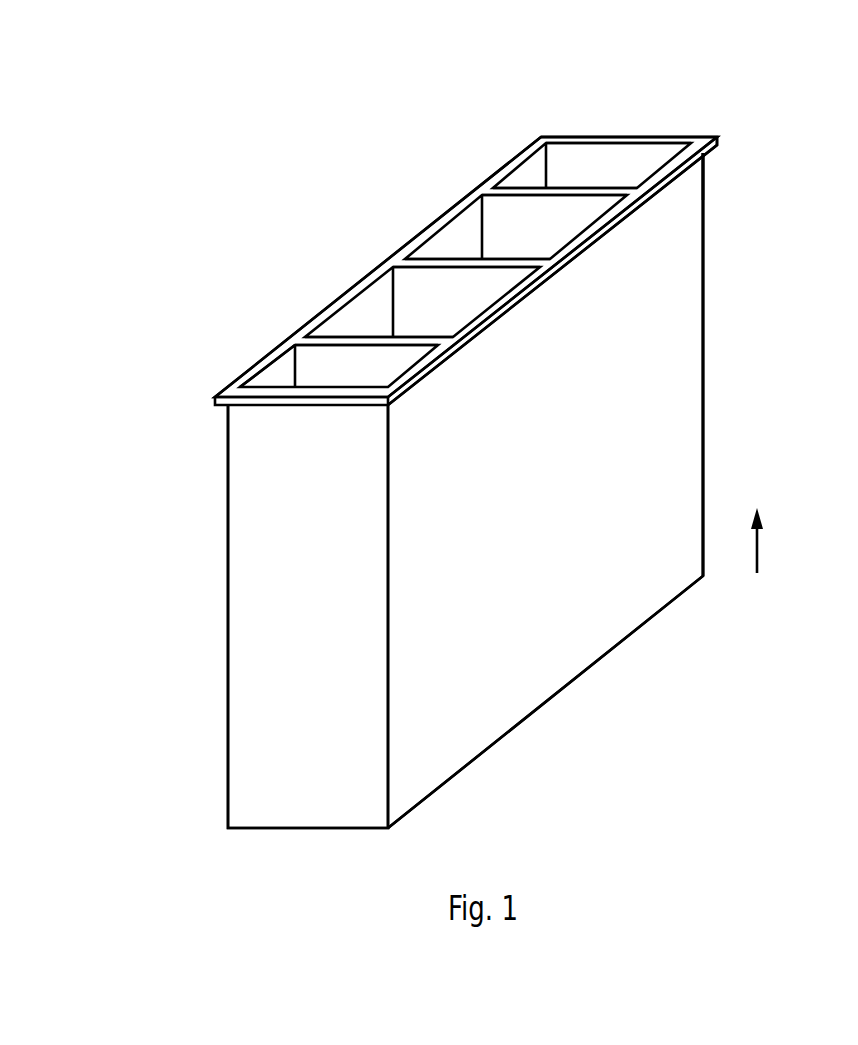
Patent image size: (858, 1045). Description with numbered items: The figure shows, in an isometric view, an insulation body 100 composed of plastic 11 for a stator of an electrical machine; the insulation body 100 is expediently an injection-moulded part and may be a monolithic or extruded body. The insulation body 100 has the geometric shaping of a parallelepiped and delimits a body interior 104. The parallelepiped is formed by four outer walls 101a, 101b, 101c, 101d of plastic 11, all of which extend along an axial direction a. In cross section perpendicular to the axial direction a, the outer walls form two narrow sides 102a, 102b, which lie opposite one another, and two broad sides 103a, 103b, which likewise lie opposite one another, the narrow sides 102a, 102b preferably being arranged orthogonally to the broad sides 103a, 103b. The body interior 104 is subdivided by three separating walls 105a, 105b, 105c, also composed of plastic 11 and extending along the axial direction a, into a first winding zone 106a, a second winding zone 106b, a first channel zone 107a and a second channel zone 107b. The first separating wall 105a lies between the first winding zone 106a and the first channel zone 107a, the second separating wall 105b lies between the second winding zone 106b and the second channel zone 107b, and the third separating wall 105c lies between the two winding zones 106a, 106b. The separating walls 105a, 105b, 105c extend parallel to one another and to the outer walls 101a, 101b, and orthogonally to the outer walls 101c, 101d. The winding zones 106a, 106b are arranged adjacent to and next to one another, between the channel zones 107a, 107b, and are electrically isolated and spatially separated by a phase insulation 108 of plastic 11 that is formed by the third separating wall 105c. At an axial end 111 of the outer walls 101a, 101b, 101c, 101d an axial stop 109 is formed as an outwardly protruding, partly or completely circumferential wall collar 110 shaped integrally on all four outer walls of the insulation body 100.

The insulation body 100 is at (265, 158).
The plastic 11 is at (680, 380).
The outer wall 101a is at (244, 616).
The narrow side 102a is at (275, 480).
The outer wall 101b is at (637, 112).
The narrow side 102b is at (635, 162).
The outer wall 101c is at (241, 333).
The broad side 103a is at (275, 377).
The outer wall 101d is at (620, 490).
The broad side 103b is at (682, 272).
The body interior 104 is at (464, 228).
The first separating wall 105a is at (342, 343).
The second separating wall 105b is at (515, 192).
The third separating wall 105c is at (438, 221).
The phase insulation 108 is at (433, 262).
The first winding zone 106a is at (460, 311).
The second winding zone 106b is at (547, 240).
The first channel zone 107a is at (365, 377).
The second channel zone 107b is at (620, 178).
The axial stop 109 is at (609, 233).
The wall collar 110 is at (712, 136).
The axial end 111 is at (744, 170).
The axial direction a is at (758, 548).